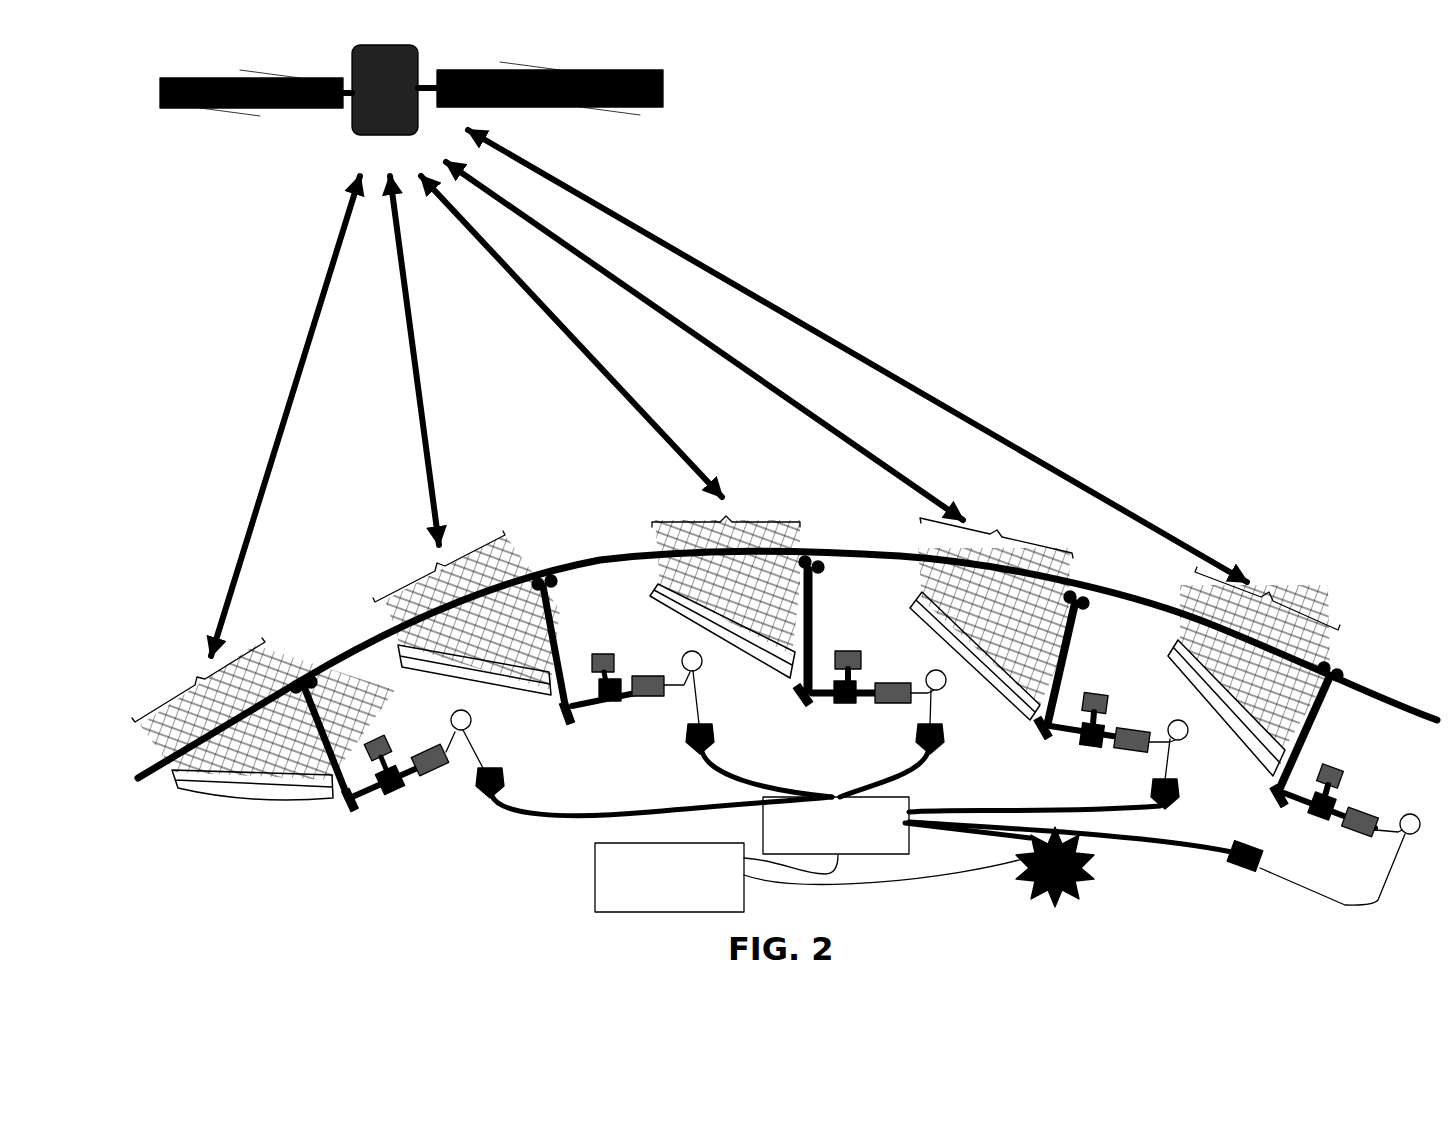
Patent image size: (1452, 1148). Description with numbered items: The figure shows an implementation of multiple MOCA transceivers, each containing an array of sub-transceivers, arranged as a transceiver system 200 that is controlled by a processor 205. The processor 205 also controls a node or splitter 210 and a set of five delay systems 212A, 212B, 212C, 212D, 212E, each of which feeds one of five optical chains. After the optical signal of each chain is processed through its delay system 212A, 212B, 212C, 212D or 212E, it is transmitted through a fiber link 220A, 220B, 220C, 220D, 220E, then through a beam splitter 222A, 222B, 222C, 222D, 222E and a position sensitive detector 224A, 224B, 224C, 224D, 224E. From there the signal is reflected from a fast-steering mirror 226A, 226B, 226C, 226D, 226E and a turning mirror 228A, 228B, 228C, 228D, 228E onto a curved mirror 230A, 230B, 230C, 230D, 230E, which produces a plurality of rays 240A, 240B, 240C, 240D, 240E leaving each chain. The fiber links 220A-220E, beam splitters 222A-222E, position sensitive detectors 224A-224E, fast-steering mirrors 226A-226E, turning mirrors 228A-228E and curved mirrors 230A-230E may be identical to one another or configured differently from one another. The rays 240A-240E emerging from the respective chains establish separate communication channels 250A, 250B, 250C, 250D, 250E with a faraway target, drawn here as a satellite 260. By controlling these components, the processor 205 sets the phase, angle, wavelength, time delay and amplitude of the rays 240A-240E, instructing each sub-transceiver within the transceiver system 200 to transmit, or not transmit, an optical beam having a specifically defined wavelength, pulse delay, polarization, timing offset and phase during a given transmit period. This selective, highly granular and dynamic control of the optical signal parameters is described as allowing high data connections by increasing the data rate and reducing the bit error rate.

The transceiver system 200 is at (1045, 882).
The processor 205 is at (595, 878).
The node (or splitter) 210 is at (762, 812).
The delay system 212A is at (480, 795).
The delay system 212B is at (697, 745).
The delay system 212C is at (945, 738).
The delay system 212D is at (1180, 796).
The delay system 212E is at (1233, 862).
The fiber link 220A is at (424, 745).
The fiber link 220B is at (648, 675).
The fiber link 220C is at (893, 682).
The fiber link 220D is at (1133, 728).
The fiber link 220E is at (1368, 812).
The beam splitter 222A is at (392, 792).
The beam splitter 222B is at (612, 703).
The beam splitter 222C is at (845, 703).
The beam splitter 222D is at (1090, 748).
The beam splitter 222E is at (1321, 816).
The position sensitive detector (PSD) 224A is at (372, 738).
The position sensitive detector (PSD) 224B is at (603, 652).
The position sensitive detector (PSD) 224C is at (848, 648).
The position sensitive detector (PSD) 224D is at (1095, 692).
The position sensitive detector (PSD) 224E is at (1335, 768).
The fast-steering mirror (FSM) 226A is at (348, 808).
The fast-steering mirror (FSM) 226B is at (565, 718).
The fast-steering mirror (FSM) 226C is at (797, 697).
The fast-steering mirror (FSM) 226D is at (1040, 735).
The fast-steering mirror (FSM) 226E is at (1272, 798).
The turning mirror 228A is at (305, 678).
The turning mirror 228B is at (542, 580).
The turning mirror 228C is at (815, 562).
The turning mirror 228D is at (1077, 596).
The turning mirror 228E is at (1332, 668).
The curved mirror 230A is at (253, 800).
The curved mirror 230B is at (400, 645).
The curved mirror 230C is at (658, 584).
The curved mirror 230D is at (925, 596).
The curved mirror 230E is at (1178, 645).
The plurality of rays 240A is at (198, 671).
The plurality of rays 240B is at (439, 541).
The plurality of rays 240C is at (726, 492).
The plurality of rays 240D is at (996, 516).
The plurality of rays 240E is at (1267, 583).
The communication channel 250A is at (285, 427).
The communication channel 250B is at (421, 420).
The communication channel 250C is at (562, 333).
The communication channel 250D is at (822, 428).
The communication channel 250E is at (818, 330).
The satellite 260 is at (663, 88).